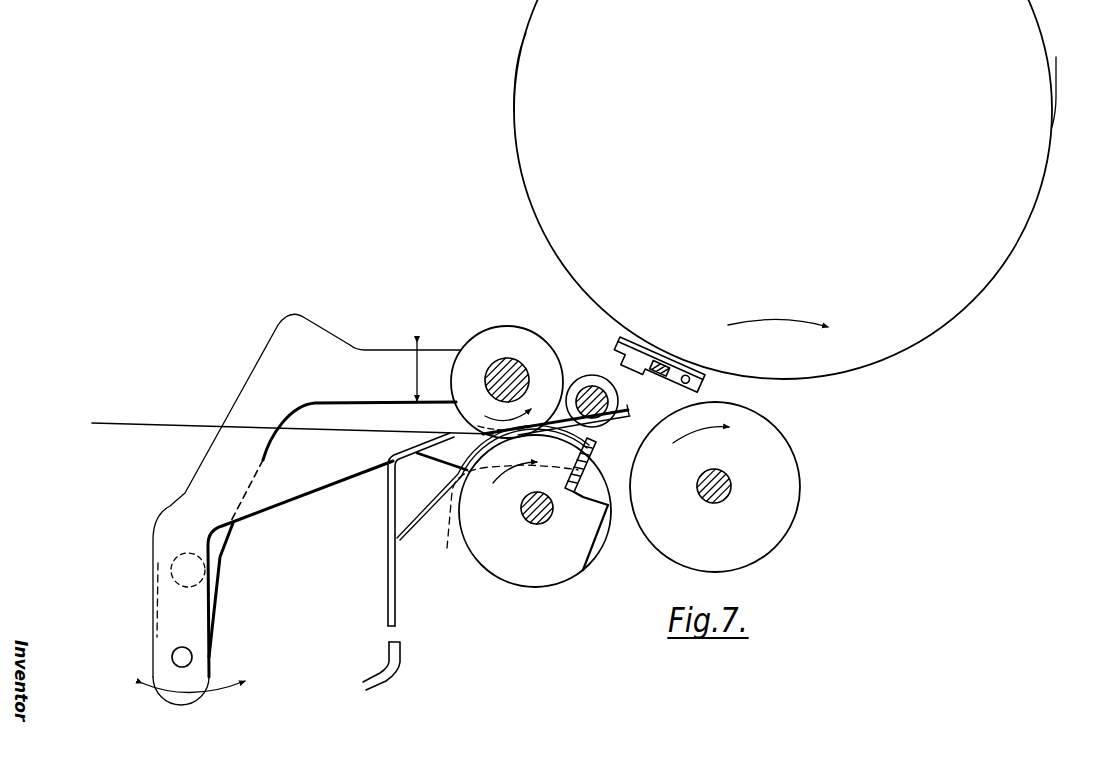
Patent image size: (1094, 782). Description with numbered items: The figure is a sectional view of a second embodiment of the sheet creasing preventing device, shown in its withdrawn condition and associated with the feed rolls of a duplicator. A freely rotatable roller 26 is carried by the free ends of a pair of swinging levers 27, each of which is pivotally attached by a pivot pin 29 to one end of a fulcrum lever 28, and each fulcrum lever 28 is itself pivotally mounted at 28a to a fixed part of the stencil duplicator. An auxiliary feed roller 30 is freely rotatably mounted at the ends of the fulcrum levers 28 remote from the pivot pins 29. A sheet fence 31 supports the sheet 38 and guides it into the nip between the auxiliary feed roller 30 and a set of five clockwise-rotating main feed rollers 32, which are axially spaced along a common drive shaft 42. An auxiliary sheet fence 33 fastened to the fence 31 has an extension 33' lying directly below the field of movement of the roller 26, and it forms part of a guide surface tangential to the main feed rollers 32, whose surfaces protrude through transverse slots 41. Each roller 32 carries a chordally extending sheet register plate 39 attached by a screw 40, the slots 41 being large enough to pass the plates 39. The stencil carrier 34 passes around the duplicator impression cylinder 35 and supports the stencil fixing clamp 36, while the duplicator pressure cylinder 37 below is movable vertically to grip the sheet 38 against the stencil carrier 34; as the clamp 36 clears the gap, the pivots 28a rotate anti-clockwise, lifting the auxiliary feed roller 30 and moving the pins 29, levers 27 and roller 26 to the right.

The freely rotatable roller 26 is at (589, 387).
The swinging levers 27 is at (322, 485).
The fulcrum lever 28 is at (296, 314).
The pivot 28a is at (193, 573).
The pivot pin 29 is at (193, 655).
The auxiliary feed roller 30 is at (474, 341).
The sheet fence 31 is at (386, 528).
The main feed rollers 32 is at (535, 576).
The auxiliary sheet fence 33 is at (493, 489).
The extension 33' is at (560, 429).
The stencil carrier 34 is at (1056, 80).
The duplicator impression cylinder 35 is at (798, 292).
The stencil fixing clamp 36 is at (673, 366).
The duplicator pressure cylinder 37 is at (782, 508).
The sheet 38 is at (390, 437).
The sheet register plate 39 is at (588, 472).
The screw 40 is at (590, 531).
The slots 41 is at (597, 557).
The common drive shaft 42 is at (530, 523).